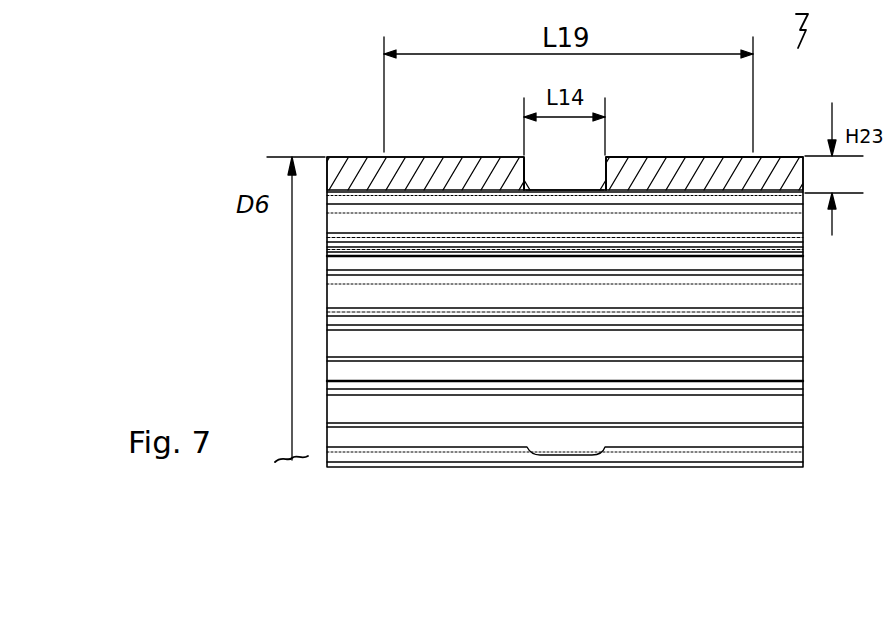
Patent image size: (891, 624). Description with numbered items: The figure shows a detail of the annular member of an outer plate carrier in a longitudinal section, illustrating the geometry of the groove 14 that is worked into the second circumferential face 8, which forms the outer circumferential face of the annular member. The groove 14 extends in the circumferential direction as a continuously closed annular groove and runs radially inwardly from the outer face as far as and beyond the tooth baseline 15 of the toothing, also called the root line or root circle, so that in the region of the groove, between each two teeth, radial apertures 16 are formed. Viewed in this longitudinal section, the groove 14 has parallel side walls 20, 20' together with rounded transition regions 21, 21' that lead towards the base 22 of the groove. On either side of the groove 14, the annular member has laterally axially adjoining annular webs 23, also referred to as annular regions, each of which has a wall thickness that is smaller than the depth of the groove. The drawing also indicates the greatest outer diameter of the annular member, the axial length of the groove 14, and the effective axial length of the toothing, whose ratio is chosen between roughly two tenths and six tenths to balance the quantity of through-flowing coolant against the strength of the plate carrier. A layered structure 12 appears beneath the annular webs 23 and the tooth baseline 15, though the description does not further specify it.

The second circumferential face 8 is at (703, 165).
The layer 12 is at (713, 200).
The groove 14 is at (606, 157).
The tooth baseline 15 is at (743, 196).
The radial apertures 16 is at (574, 194).
The side wall 20 is at (624, 149).
The side wall 20' is at (500, 149).
The rounded transition region 21 is at (644, 154).
The rounded transition region 21' is at (475, 159).
The base of the groove 22 is at (565, 192).
The annular webs 23 is at (773, 175).